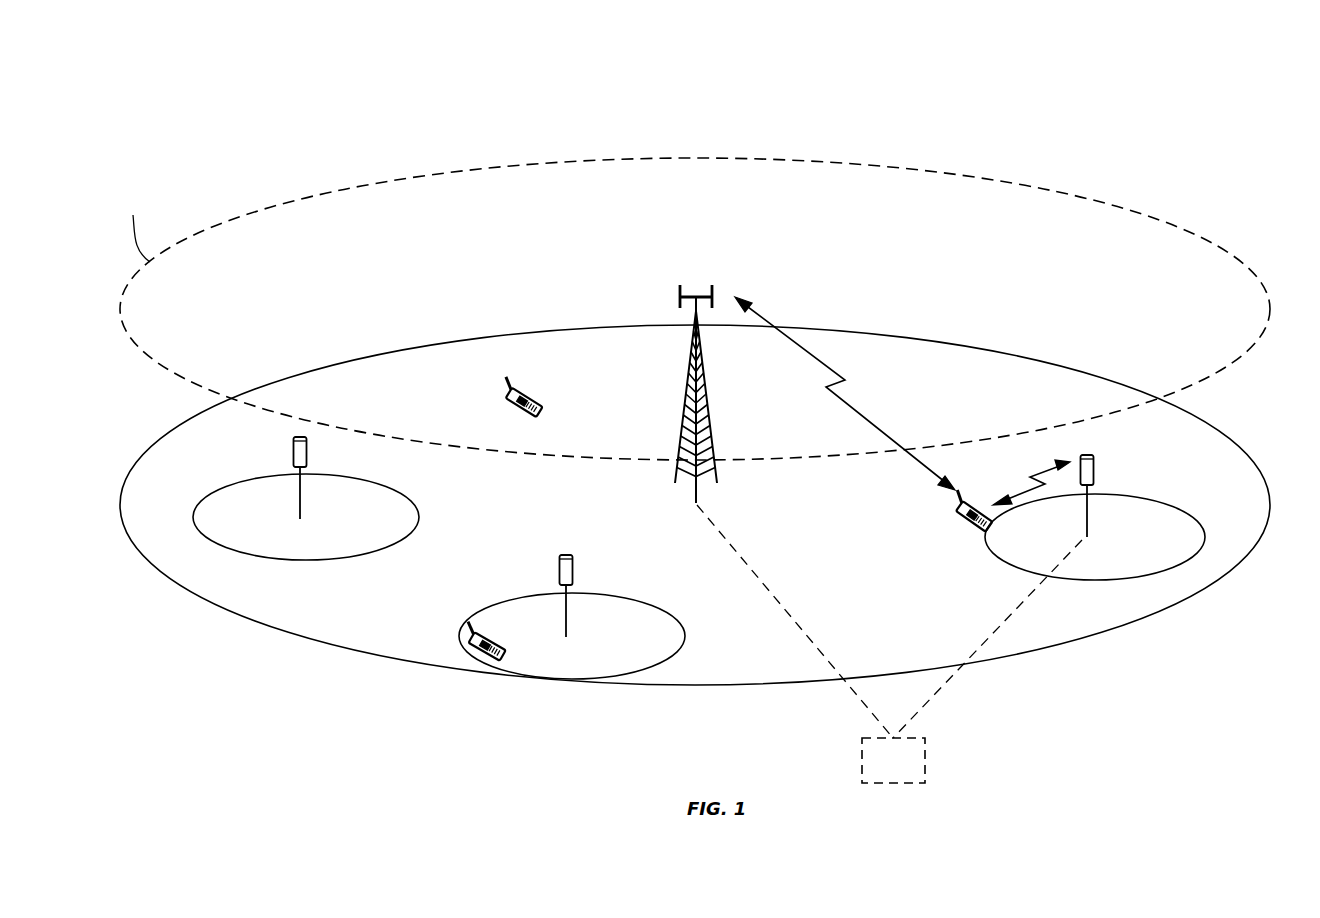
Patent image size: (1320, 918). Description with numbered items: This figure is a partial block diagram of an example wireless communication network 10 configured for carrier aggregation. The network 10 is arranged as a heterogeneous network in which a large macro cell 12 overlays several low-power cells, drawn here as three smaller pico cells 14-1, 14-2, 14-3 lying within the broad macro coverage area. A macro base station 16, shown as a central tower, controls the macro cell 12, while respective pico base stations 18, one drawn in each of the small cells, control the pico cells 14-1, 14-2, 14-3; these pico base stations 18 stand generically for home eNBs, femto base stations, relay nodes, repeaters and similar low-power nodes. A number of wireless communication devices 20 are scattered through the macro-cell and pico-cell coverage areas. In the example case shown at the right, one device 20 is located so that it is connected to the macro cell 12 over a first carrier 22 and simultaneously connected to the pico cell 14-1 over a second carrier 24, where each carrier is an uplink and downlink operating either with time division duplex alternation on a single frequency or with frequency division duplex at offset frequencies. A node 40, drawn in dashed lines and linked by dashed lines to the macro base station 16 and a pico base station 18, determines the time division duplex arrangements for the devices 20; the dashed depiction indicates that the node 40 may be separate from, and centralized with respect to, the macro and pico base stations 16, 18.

The wireless communication network 10 is at (1082, 135).
The macro cell 12 is at (153, 570).
The pico cell 14-1 is at (1160, 500).
The pico cell 14-2 is at (508, 600).
The pico cell 14-3 is at (365, 556).
The macro base station 16 is at (714, 486).
The pico base station 18 is at (302, 518).
The wireless communication device 20 is at (522, 408).
The first carrier 22 is at (805, 350).
The second carrier 24 is at (1020, 492).
The node 40 is at (889, 644).